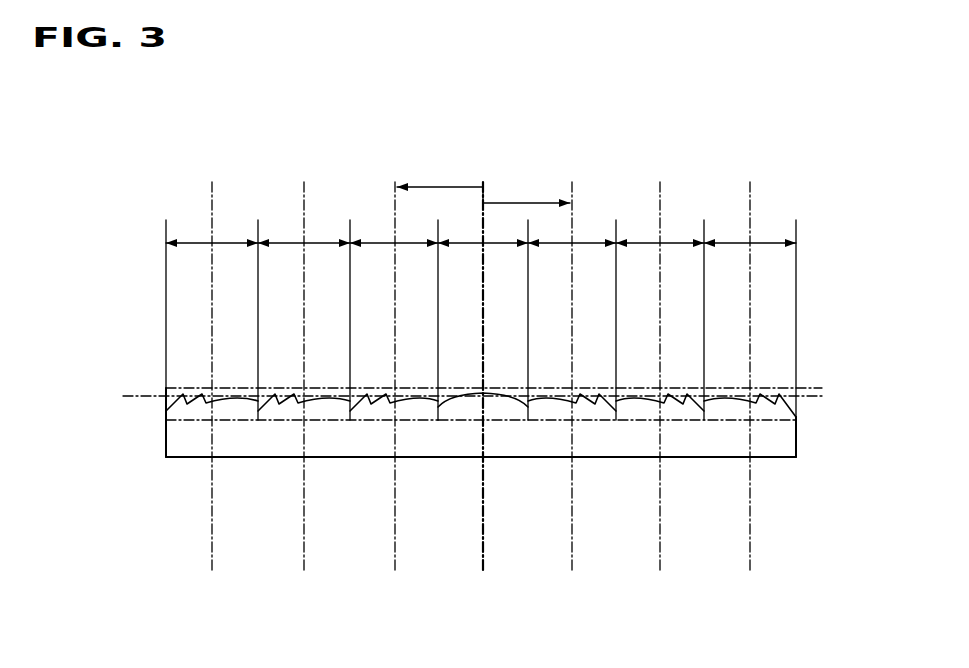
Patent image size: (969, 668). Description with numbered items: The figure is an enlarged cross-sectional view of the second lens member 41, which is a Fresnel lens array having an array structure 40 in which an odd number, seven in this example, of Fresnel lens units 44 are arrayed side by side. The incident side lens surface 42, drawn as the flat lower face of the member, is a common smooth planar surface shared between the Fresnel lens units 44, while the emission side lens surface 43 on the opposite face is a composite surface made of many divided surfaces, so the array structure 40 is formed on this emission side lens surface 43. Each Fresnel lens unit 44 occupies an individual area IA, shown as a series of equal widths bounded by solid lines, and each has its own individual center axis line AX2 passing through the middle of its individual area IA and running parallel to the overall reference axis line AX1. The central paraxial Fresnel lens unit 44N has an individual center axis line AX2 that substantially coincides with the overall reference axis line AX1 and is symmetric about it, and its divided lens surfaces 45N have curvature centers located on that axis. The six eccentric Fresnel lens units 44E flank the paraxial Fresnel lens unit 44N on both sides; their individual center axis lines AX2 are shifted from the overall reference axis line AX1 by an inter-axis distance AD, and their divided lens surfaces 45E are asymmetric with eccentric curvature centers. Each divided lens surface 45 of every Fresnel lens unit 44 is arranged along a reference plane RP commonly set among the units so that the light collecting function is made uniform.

The array structure 40 is at (158, 404).
The second lens member 41 is at (135, 272).
The incident side lens surface 42 is at (786, 464).
The emission side lens surface 43 is at (795, 403).
The Fresnel lens unit 44 is at (373, 422).
The eccentric Fresnel lens unit 44E is at (733, 422).
The paraxial Fresnel lens unit 44N is at (463, 422).
The divided lens surface 45 is at (586, 392).
The divided lens surface of eccentric Fresnel lens unit 45E is at (378, 392).
The divided lens surface of paraxial Fresnel lens unit 45N is at (447, 392).
The individual area IA is at (768, 240).
The inter-axis distance AD is at (523, 202).
The reference plane RP is at (808, 393).
The overall reference axis line AX1 is at (480, 539).
The individual center axis line AX2 is at (751, 539).